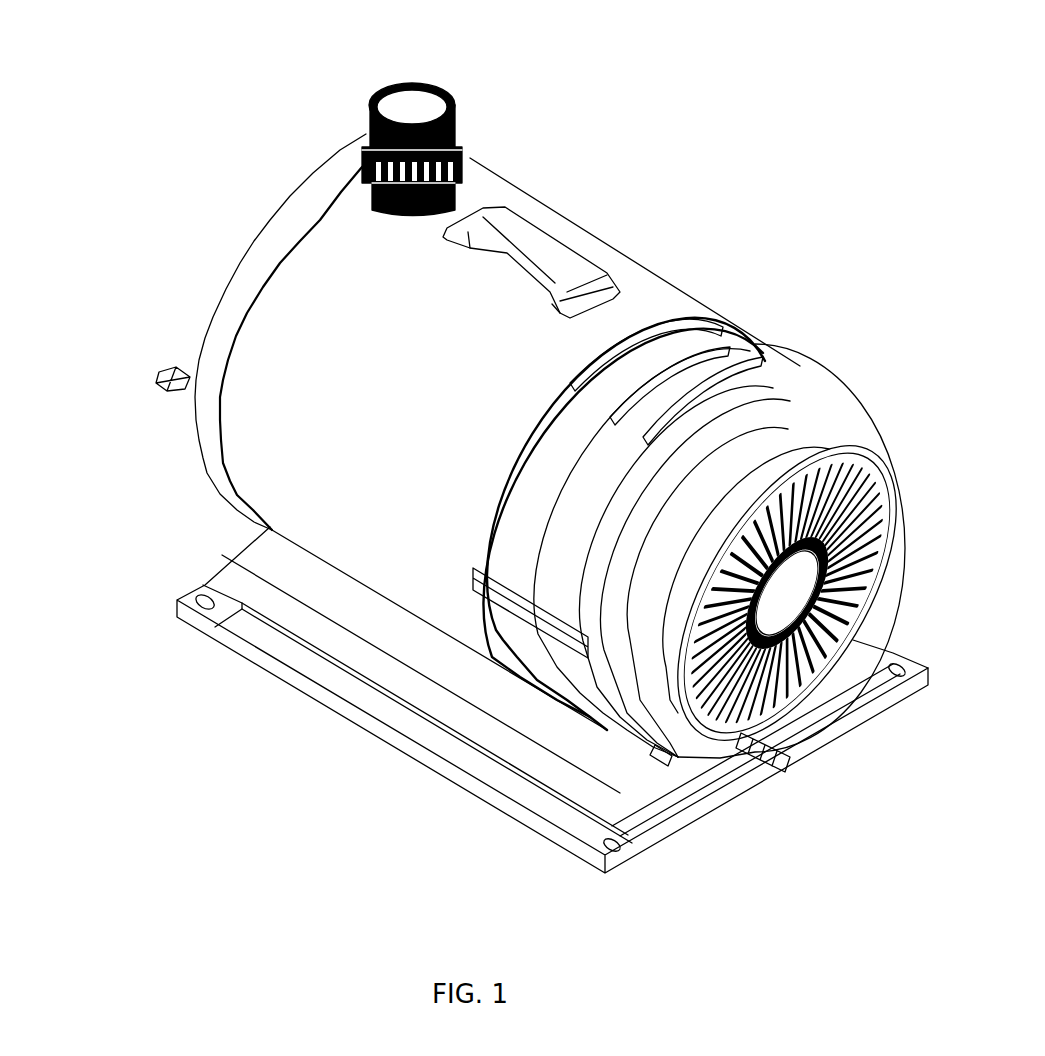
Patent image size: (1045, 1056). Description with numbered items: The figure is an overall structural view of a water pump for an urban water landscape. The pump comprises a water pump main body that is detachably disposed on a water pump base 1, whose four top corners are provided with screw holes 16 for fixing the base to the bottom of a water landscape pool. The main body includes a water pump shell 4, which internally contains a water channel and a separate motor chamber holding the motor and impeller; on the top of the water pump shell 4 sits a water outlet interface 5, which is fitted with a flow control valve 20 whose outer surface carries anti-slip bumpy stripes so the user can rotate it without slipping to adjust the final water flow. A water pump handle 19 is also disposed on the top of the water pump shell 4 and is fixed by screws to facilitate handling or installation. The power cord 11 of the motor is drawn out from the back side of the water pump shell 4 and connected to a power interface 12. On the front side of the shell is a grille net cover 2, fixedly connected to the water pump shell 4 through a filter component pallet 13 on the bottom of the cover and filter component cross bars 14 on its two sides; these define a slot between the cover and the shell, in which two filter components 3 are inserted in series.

The water pump base 1 is at (350, 712).
The grille net cover 2 is at (780, 420).
The filter component 3 is at (515, 556).
The water pump shell 4 is at (302, 270).
The water outlet interface 5 is at (418, 103).
The power cord 11 is at (187, 404).
The power interface 12 is at (163, 370).
The filter component pallet 13 is at (582, 700).
The filter component cross bar 14 is at (540, 656).
The screw hole 16 is at (200, 606).
The water pump handle 19 is at (540, 255).
The flow control valve 20 is at (360, 142).